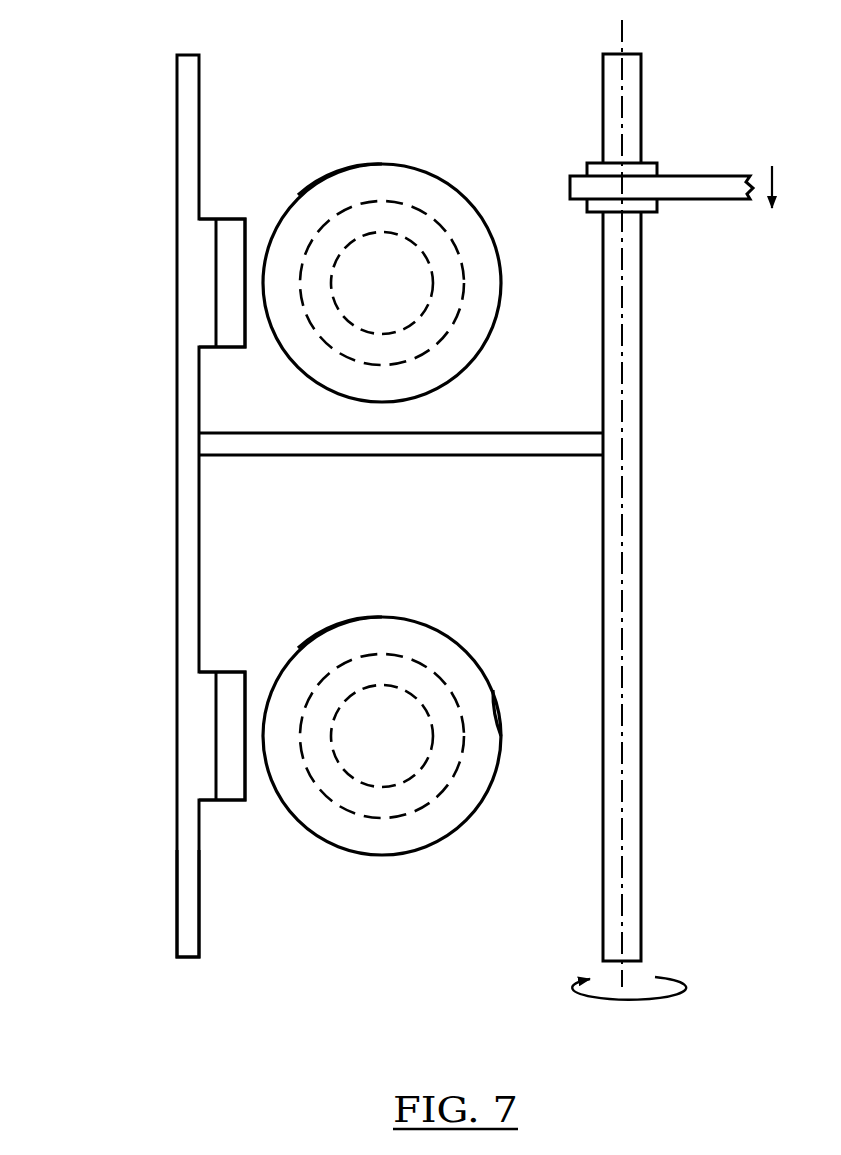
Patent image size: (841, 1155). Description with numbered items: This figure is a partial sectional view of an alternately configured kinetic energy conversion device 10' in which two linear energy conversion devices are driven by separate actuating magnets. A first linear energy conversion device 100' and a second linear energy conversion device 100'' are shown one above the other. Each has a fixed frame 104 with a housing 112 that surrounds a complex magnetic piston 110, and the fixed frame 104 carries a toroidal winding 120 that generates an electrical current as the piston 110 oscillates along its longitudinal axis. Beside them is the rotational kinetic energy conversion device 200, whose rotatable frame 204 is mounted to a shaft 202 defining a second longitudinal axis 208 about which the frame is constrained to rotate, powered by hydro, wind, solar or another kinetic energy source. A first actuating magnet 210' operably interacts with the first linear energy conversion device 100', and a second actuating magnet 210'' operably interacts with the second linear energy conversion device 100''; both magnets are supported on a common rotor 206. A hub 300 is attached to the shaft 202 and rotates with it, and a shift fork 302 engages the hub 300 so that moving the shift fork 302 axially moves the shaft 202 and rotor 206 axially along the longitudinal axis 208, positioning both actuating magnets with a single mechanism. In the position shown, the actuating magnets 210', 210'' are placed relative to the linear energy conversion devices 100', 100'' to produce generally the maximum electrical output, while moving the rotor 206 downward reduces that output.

The kinetic energy conversion device 10' is at (408, 500).
The first linear energy conversion device 100' is at (358, 522).
The second linear energy conversion device 100'' is at (516, 674).
The fixed frame 104 is at (325, 178).
The complex magnetic piston 110 is at (385, 335).
The housing 112 is at (298, 195).
The toroidal winding 120 is at (360, 366).
The rotational kinetic energy conversion device 200 is at (668, 500).
The shaft 202 is at (643, 565).
The rotatable frame 204 is at (176, 917).
The rotor 206 is at (177, 498).
The second longitudinal axis 208 is at (622, 37).
The first actuating magnet 210' is at (176, 281).
The second actuating magnet 210'' is at (174, 733).
The hub 300 is at (652, 213).
The shift fork 302 is at (725, 200).